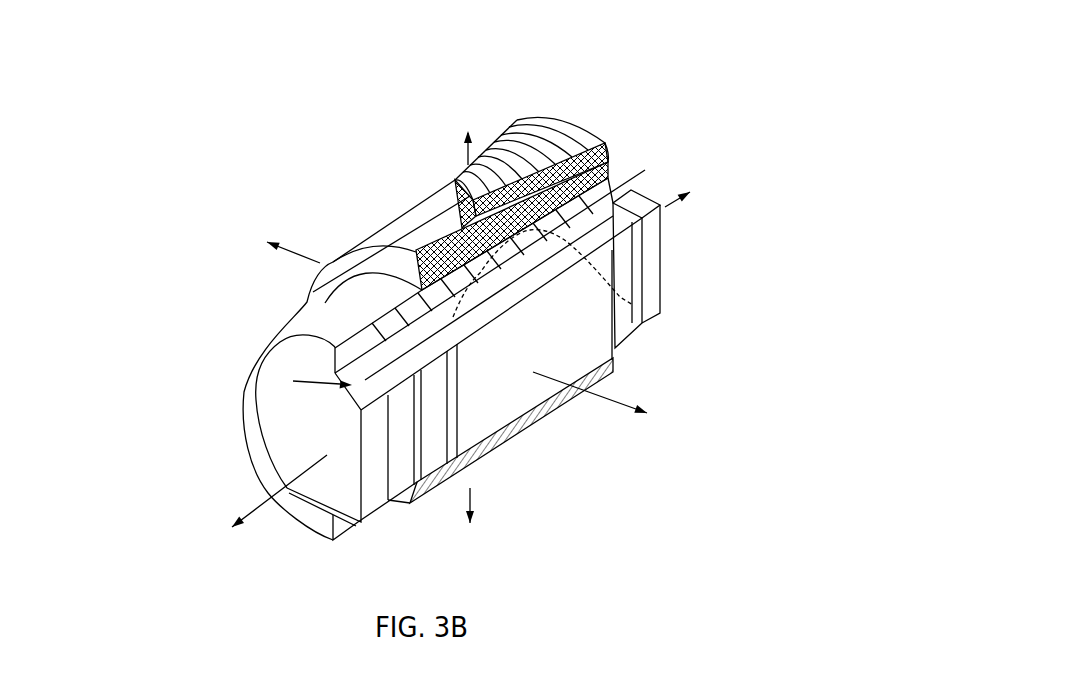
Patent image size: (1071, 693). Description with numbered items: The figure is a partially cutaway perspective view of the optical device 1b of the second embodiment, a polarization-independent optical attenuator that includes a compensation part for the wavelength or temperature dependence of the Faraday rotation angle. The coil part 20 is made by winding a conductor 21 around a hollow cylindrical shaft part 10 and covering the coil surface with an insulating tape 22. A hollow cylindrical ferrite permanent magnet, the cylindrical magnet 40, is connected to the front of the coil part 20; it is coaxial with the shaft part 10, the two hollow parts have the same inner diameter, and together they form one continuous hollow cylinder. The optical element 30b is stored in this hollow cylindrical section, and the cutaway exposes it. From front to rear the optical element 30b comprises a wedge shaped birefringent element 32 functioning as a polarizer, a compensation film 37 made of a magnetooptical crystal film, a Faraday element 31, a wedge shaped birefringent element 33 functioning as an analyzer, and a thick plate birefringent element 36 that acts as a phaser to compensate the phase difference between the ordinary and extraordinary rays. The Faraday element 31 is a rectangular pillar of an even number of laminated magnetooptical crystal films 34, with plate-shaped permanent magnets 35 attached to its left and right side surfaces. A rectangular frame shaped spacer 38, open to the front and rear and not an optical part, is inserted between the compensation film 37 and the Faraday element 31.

The optical device 1b is at (185, 282).
The shaft part 10 is at (608, 163).
The coil part 20 is at (335, 278).
The conductor 21 is at (570, 135).
The insulating tape 22 is at (463, 228).
The optical element 30b is at (290, 378).
The Faraday element 31 is at (633, 305).
The wedge shaped birefringent element 32 is at (302, 443).
The wedge shaped birefringent element 33 is at (625, 195).
The magnetooptical crystal film 34 is at (497, 323).
The plate-shaped permanent magnet 35 is at (490, 423).
The thick plate birefringent element 36 is at (653, 248).
The compensation film 37 is at (412, 468).
The spacer 38 is at (490, 463).
The cylindrical magnet 40 is at (320, 325).